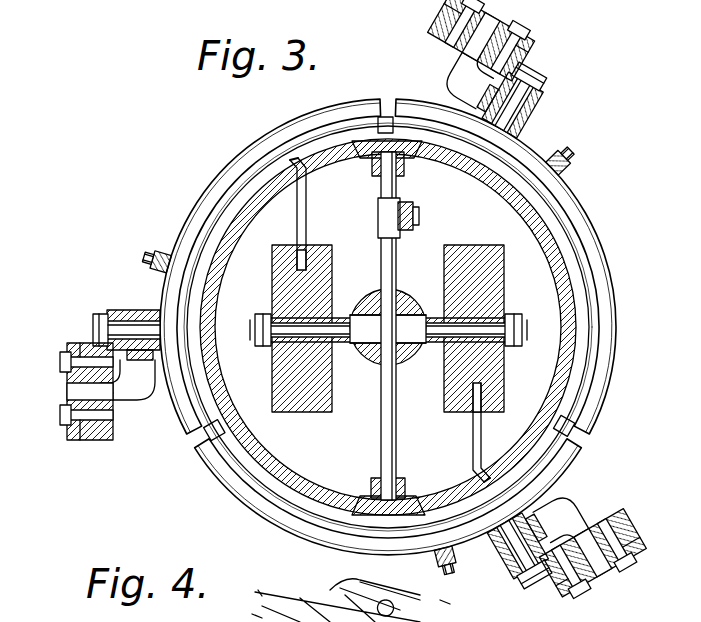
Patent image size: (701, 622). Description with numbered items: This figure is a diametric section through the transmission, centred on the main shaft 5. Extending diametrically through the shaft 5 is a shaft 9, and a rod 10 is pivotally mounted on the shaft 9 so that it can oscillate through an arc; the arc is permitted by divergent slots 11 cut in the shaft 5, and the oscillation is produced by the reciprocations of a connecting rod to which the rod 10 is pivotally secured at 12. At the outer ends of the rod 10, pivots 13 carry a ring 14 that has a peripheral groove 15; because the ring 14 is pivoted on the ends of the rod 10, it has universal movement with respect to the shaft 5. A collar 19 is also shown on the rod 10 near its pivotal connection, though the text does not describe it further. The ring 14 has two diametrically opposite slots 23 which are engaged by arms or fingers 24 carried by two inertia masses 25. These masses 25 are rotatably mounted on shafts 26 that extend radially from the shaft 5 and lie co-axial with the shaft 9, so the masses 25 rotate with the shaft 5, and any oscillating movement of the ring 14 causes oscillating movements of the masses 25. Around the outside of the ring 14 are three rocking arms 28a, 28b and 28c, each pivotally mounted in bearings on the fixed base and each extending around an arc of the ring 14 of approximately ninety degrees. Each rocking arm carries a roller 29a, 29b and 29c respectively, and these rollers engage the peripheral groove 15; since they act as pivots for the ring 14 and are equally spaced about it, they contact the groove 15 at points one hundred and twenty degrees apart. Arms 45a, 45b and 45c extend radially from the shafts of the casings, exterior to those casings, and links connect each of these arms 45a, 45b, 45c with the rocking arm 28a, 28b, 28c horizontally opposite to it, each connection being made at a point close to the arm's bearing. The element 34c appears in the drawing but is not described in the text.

In FIG. 3, the shaft 5 is at (369, 306).
In FIG. 4, the shaft 5 is at (258, 588).
In FIG. 3, the shaft 9 is at (363, 348).
In FIG. 3, the rod 10 is at (381, 428).
In FIG. 3, the divergent slots 11 is at (397, 304).
In FIG. 3, the pivotal connection 12 is at (398, 200).
In FIG. 3, the pivot mounting 13 is at (401, 167).
In FIG. 3, the ring 14 is at (285, 488).
In FIG. 3, the peripheral groove 15 is at (412, 128).
In FIG. 3, the collar 19 is at (406, 231).
In FIG. 3, the slots 23 is at (323, 166).
In FIG. 3, the arms or fingers 24 is at (306, 209).
In FIG. 3, the inertia masses 25 is at (322, 252).
In FIG. 3, the shafts 26 is at (272, 365).
In FIG. 3, the rocking arm 28a is at (616, 327).
In FIG. 3, the rocking arm 28b is at (276, 527).
In FIG. 3, the rocking arm 28c is at (197, 205).
In FIG. 3, the roller 29a is at (563, 438).
In FIG. 3, the roller 29b is at (208, 428).
In FIG. 3, the roller 29c is at (388, 116).
In FIG. 4, the arm 34c is at (255, 617).
In FIG. 3, the arm 45a is at (566, 172).
In FIG. 4, the arm 45a is at (446, 611).
In FIG. 3, the arm 45b is at (448, 563).
In FIG. 3, the arm 45c is at (160, 248).